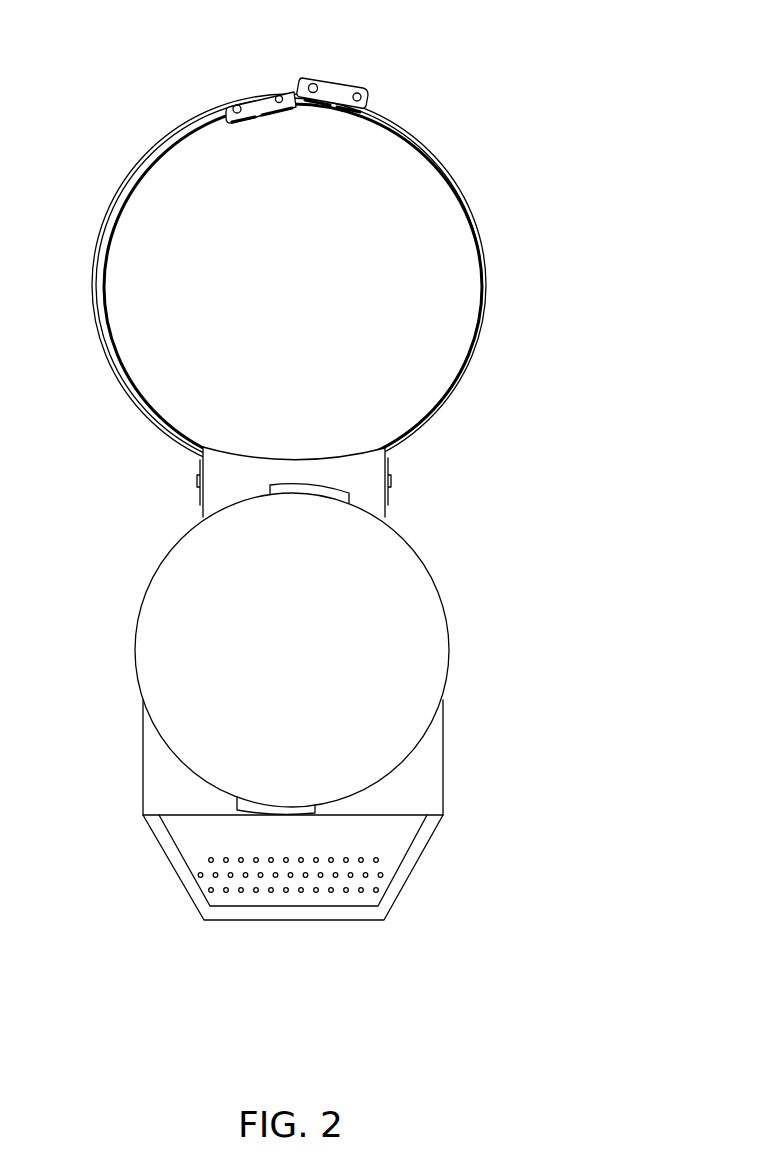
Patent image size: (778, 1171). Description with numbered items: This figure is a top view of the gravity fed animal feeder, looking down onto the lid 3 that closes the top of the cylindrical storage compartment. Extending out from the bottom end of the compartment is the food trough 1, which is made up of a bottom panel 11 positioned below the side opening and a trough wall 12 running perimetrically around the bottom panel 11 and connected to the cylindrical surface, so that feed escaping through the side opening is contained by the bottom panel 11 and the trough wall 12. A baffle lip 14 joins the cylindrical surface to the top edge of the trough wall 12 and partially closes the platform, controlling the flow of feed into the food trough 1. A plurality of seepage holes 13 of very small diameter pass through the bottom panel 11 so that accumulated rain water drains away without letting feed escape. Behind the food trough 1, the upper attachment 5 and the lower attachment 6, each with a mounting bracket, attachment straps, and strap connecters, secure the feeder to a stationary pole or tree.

The food trough 1 is at (445, 737).
The lid 3 is at (177, 622).
The upper attachment 5 is at (338, 73).
The lower attachment 6 is at (246, 128).
The bottom panel 11 is at (393, 830).
The trough wall 12 is at (412, 860).
The plurality of seepage holes 13 is at (210, 862).
The baffle lip 14 is at (173, 785).